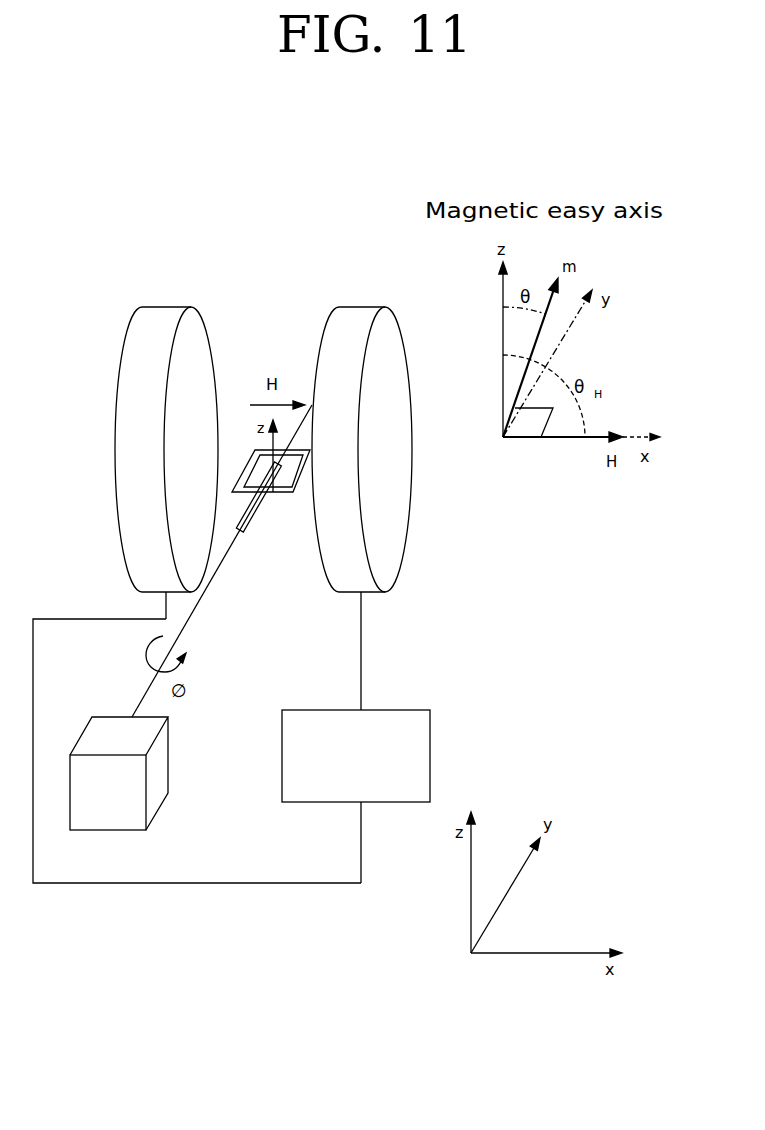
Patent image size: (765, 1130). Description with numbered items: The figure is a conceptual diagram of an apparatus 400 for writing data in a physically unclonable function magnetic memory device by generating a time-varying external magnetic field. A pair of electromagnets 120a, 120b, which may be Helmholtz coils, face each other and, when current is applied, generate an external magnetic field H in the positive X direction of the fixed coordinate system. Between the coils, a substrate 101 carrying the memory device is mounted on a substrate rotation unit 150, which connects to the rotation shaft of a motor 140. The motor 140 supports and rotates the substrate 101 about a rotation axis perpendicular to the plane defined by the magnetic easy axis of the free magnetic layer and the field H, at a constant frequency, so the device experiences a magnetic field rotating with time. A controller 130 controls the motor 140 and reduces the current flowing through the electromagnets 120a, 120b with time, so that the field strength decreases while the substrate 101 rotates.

The apparatus for writing data in a physically unclonable function magnetic memory d 400 is at (143, 186).
The electromagnet 120a is at (180, 307).
The electromagnet 120b is at (374, 307).
The substrate 101 is at (290, 472).
The substrate rotation unit 150 is at (260, 510).
The motor 140 is at (168, 760).
The controller 130 is at (430, 757).